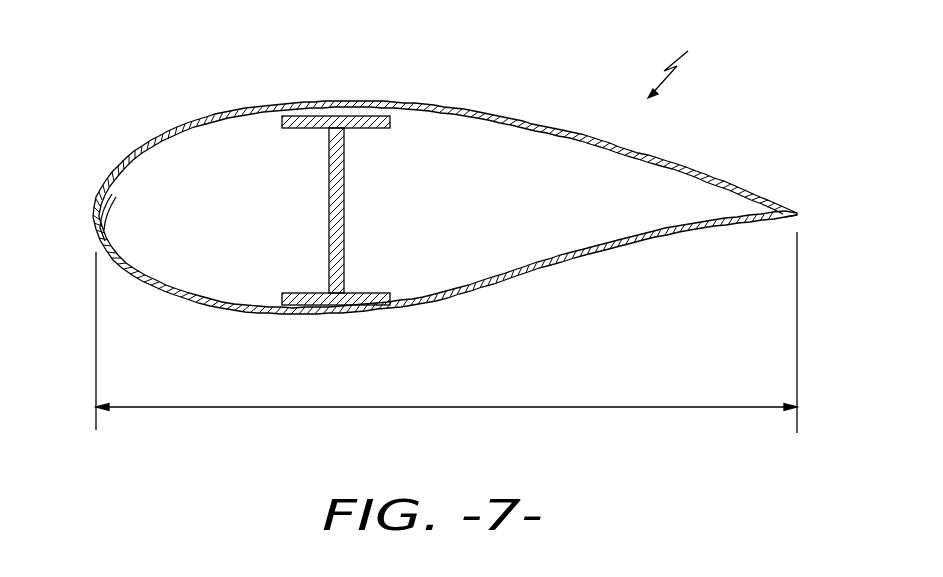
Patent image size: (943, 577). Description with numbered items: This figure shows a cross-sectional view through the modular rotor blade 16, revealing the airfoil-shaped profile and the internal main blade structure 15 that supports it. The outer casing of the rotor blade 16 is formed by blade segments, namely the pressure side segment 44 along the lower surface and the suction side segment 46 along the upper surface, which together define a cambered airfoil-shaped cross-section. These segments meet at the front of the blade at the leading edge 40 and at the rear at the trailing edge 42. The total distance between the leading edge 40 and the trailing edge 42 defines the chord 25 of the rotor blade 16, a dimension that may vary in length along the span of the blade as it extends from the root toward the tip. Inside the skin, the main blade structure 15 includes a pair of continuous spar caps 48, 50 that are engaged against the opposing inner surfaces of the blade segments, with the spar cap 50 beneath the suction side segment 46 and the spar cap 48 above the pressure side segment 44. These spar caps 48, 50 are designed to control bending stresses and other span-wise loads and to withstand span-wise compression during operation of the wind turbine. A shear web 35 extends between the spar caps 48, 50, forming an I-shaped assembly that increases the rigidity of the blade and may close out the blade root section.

The rotor blade 16 is at (685, 63).
The main blade structure 15 is at (345, 208).
The chord 25 is at (590, 410).
The shear web 35 is at (326, 213).
The leading edge 40 is at (93, 212).
The trailing edge 42 is at (782, 203).
The pressure side segment 44 is at (550, 270).
The suction side segment 46 is at (482, 110).
The spar cap 48 is at (360, 293).
The spar cap 50 is at (358, 128).